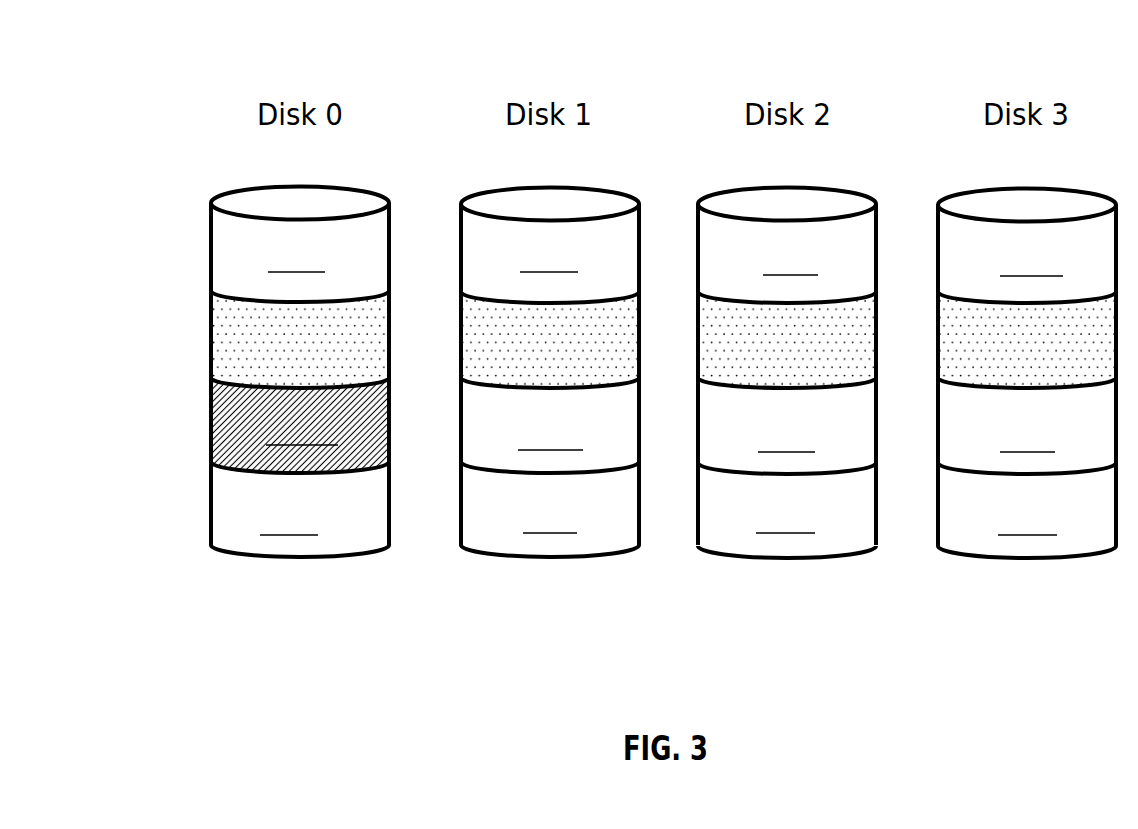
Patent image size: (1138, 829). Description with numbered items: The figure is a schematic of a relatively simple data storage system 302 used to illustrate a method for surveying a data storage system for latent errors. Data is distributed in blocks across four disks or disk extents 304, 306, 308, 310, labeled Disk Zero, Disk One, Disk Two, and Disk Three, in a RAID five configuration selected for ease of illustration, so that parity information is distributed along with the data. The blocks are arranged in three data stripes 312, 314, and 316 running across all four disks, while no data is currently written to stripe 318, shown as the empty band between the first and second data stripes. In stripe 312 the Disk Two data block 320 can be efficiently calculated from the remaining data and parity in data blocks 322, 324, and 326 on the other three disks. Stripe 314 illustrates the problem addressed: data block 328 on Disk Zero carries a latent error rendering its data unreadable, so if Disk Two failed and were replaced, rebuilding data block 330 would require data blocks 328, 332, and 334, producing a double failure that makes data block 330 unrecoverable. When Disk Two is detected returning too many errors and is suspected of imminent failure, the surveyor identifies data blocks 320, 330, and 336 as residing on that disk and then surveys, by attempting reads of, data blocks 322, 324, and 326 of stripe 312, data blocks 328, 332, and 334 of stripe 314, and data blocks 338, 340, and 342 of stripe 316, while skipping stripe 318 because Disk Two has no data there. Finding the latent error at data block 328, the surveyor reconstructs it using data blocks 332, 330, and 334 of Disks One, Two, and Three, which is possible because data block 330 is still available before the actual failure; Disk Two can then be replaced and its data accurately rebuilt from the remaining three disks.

The data storage system 302 is at (154, 113).
The disk or disk extent (Disk 0) 304 is at (355, 183).
The disk or disk extent (Disk 1) 306 is at (609, 181).
The disk or disk extent (Disk 2) 308 is at (845, 185).
The disk or disk extent (Disk 3) 310 is at (1080, 183).
The stripe 312 is at (187, 257).
The stripe 318 is at (194, 334).
The stripe 314 is at (189, 419).
The stripe 316 is at (195, 510).
The data block 320 is at (790, 258).
The data block 322 is at (297, 255).
The data block 324 is at (549, 255).
The data block 326 is at (1031, 259).
The data block 328 is at (300, 425).
The data block 330 is at (786, 434).
The data block 332 is at (550, 433).
The data block 334 is at (1027, 434).
The data block 336 is at (785, 517).
The data block 338 is at (289, 518).
The data block 340 is at (550, 518).
The data block 342 is at (1027, 518).